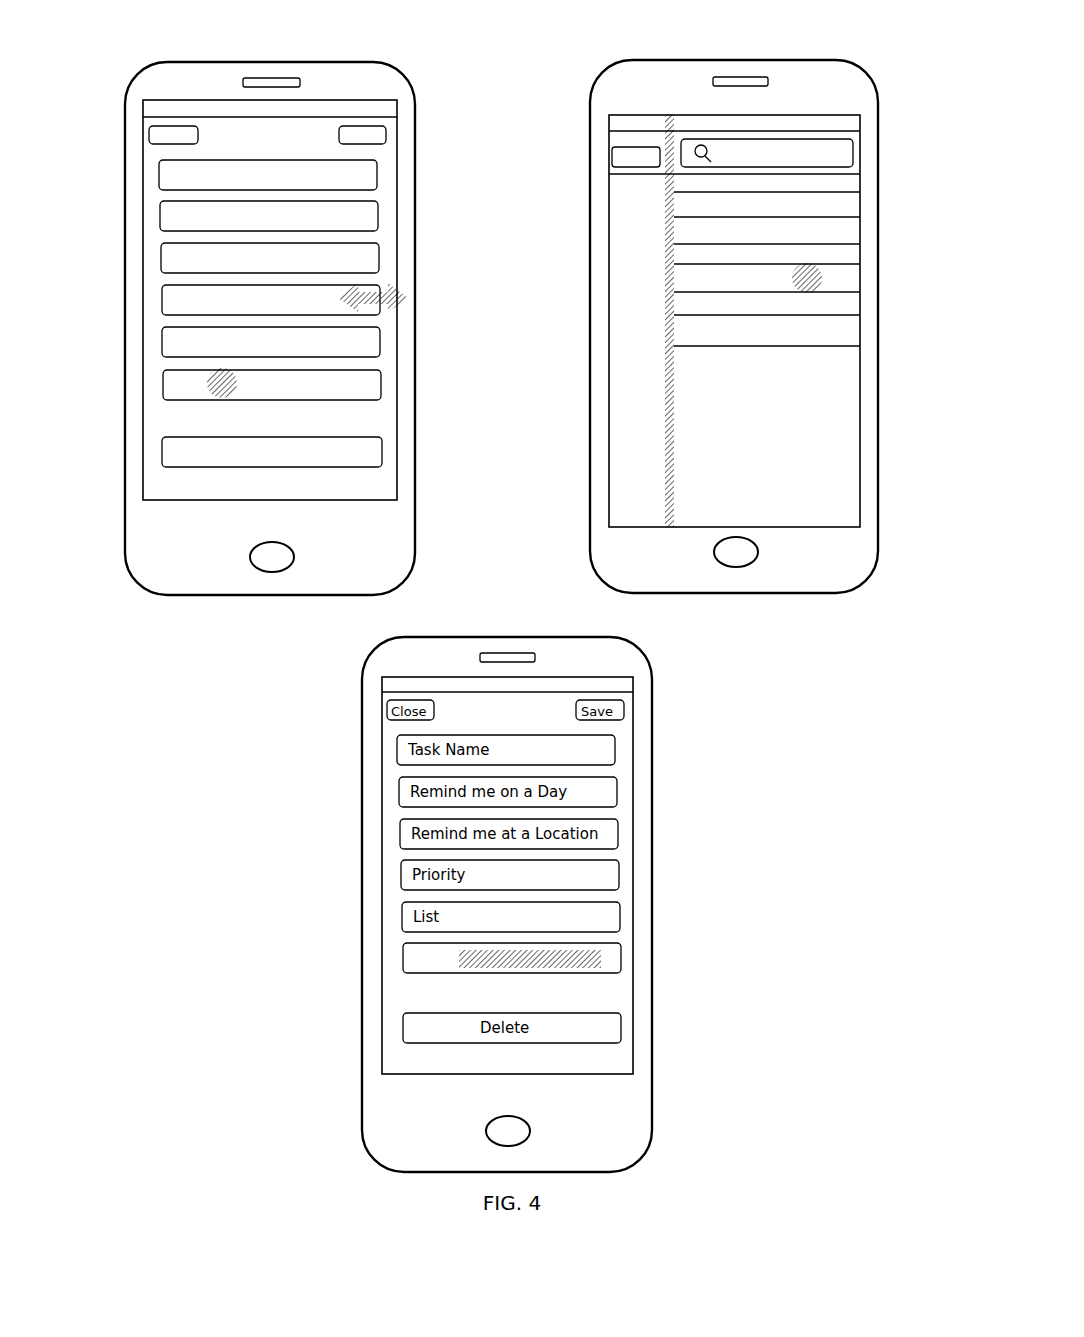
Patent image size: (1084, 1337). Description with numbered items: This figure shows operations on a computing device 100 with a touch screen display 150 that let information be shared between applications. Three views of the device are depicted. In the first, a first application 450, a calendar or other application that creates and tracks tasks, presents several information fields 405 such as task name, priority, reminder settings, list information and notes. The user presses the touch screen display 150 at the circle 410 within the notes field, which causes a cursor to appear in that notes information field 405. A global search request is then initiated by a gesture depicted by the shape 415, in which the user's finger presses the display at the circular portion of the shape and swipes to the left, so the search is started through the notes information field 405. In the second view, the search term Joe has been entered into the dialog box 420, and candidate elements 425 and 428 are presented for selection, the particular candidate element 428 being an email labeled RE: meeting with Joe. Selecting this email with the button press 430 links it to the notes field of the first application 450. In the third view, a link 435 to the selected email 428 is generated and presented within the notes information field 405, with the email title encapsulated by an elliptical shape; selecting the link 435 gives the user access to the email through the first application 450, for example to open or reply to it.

The computing device 100 is at (185, 62).
The touch screen display 150 is at (133, 452).
The information fields 405 is at (160, 175).
The circle 410 is at (222, 388).
The shape 415 is at (404, 296).
The dialog box 420 is at (825, 157).
The candidate elements 425 is at (852, 205).
The candidate element 428 is at (676, 280).
The button press 430 is at (842, 278).
The link 435 is at (605, 960).
The first application 450 is at (385, 193).